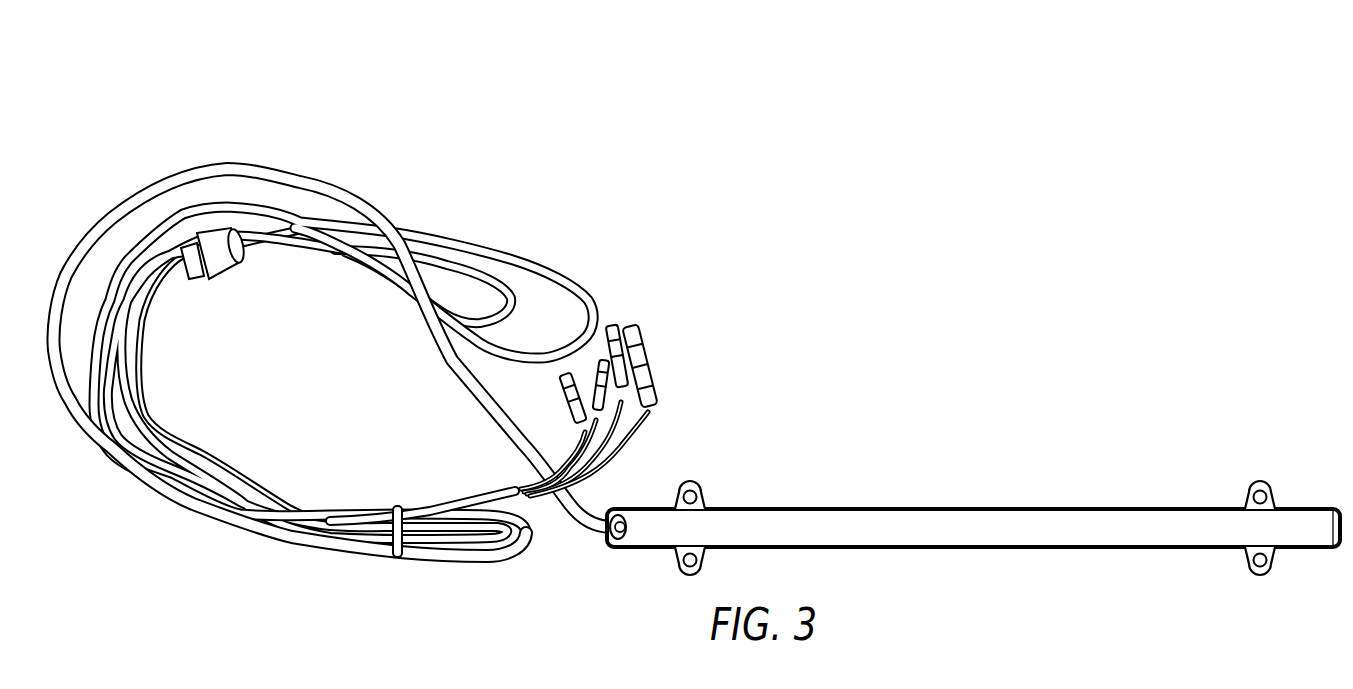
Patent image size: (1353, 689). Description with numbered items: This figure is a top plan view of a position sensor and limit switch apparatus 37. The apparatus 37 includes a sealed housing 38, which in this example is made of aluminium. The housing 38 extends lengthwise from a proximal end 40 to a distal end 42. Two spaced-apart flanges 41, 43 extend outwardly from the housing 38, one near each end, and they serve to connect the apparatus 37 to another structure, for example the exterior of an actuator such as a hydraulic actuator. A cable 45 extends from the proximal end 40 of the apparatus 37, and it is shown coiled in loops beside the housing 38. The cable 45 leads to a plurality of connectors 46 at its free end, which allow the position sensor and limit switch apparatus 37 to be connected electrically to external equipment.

The position sensor and limit switch apparatus 37 is at (392, 125).
The sealed housing 38 is at (940, 505).
The proximal end 40 is at (612, 505).
The flange 41 is at (1260, 487).
The distal end 42 is at (1340, 508).
The flange 43 is at (692, 487).
The cable 45 is at (445, 365).
The connectors 46 is at (638, 323).